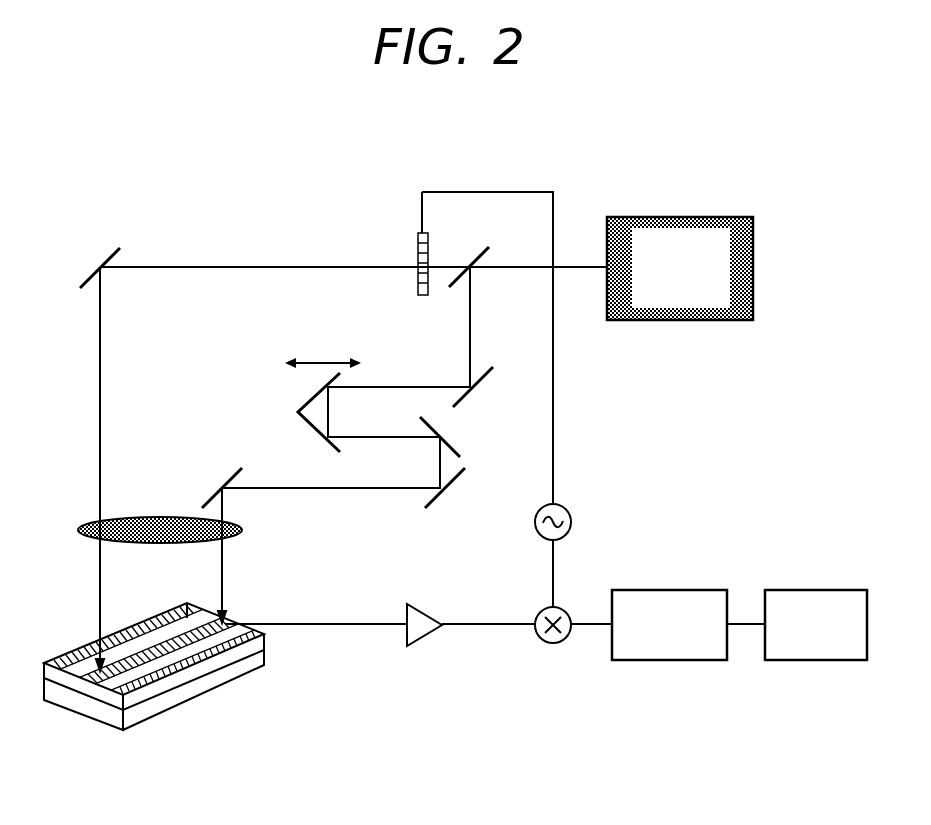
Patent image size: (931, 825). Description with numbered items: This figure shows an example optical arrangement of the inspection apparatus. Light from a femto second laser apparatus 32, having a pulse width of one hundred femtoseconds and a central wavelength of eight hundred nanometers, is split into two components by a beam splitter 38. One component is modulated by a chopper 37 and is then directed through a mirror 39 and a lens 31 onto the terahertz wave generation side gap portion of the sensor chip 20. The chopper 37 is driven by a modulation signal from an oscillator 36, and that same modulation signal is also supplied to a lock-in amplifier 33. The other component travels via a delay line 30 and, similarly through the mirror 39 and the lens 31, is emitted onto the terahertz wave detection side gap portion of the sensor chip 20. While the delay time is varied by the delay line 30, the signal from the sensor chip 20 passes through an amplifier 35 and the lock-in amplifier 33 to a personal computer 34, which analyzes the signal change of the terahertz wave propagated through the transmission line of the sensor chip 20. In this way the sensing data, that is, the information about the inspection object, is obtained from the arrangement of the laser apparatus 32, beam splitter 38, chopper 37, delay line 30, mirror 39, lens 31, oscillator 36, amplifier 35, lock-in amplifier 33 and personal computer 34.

The sensor chip 20 is at (193, 703).
The delay line 30 is at (310, 400).
The lens 31 is at (86, 521).
The femto second laser apparatus 32 is at (693, 216).
The lock-in amplifier 33 is at (672, 661).
The personal computer 34 is at (806, 661).
The amplifier 35 is at (425, 640).
The oscillator 36 is at (572, 520).
The chopper 37 is at (418, 245).
The beam splitter 38 is at (470, 262).
The mirror 39 is at (97, 265).